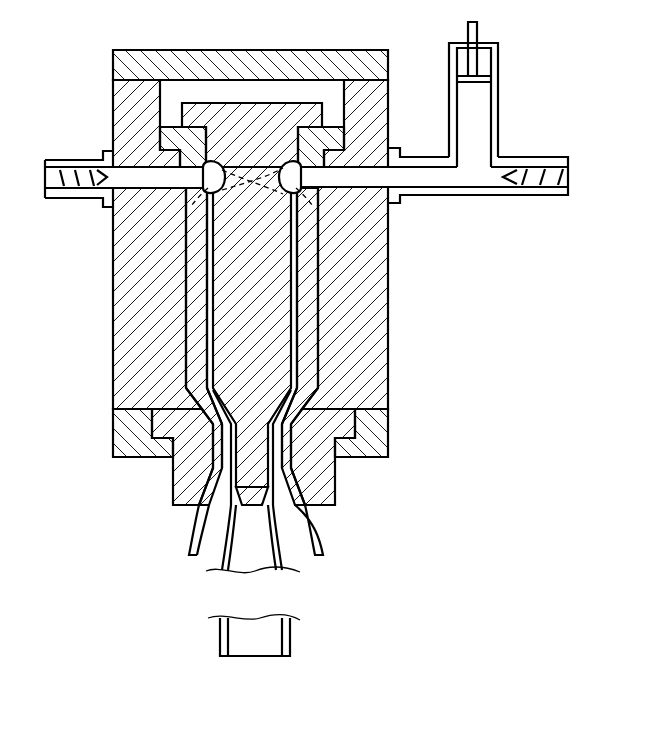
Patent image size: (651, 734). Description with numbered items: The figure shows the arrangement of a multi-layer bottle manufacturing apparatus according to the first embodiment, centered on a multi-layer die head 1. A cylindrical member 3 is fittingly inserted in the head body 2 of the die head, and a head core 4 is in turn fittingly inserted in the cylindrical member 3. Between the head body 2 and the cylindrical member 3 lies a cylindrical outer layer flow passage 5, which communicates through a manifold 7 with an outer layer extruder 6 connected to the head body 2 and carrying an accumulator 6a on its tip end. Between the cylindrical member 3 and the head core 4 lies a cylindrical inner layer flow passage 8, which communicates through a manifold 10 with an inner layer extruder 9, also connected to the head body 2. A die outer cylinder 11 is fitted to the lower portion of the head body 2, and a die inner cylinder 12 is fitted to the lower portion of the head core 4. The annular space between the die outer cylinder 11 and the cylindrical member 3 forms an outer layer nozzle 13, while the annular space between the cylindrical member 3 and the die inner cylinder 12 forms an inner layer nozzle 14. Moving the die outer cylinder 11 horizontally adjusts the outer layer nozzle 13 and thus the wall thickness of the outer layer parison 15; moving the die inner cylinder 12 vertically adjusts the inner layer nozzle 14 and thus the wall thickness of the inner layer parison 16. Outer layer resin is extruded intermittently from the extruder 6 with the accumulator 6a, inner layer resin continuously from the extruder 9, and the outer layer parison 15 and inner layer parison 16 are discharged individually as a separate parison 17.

The multi-layer die head 1 is at (397, 58).
The head body 2 is at (390, 250).
The cylindrical member 3 is at (318, 286).
The head core 4 is at (292, 336).
The outer layer flow passage 5 is at (187, 274).
The outer layer extruder 6 is at (535, 157).
The accumulator 6a is at (499, 68).
The manifold 7 is at (276, 176).
The inner layer flow passage 8 is at (208, 316).
The inner layer extruder 9 is at (75, 163).
The manifold 10 is at (238, 172).
The die outer cylinder 11 is at (173, 480).
The die inner cylinder 12 is at (250, 507).
The outer layer nozzle 13 is at (200, 514).
The inner layer nozzle 14 is at (308, 514).
The outer layer parison 15 is at (189, 540).
The inner layer parison 16 is at (290, 628).
The separate parison 17 is at (193, 573).